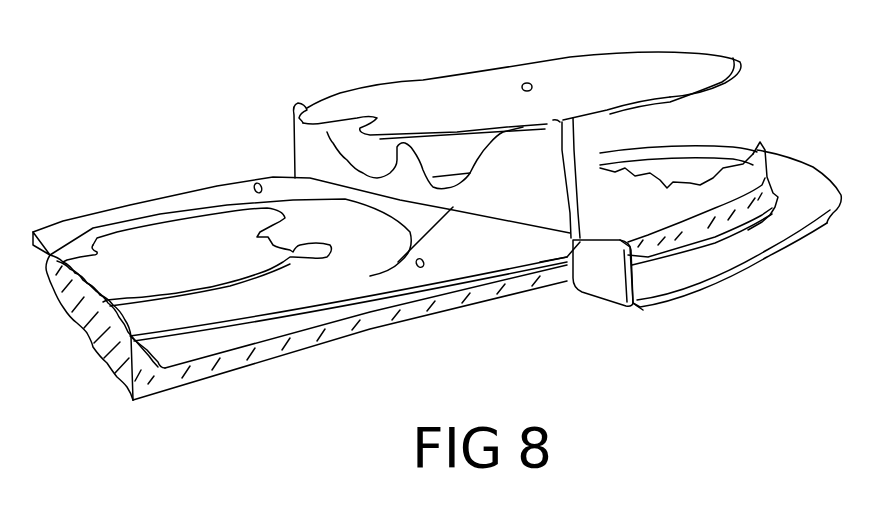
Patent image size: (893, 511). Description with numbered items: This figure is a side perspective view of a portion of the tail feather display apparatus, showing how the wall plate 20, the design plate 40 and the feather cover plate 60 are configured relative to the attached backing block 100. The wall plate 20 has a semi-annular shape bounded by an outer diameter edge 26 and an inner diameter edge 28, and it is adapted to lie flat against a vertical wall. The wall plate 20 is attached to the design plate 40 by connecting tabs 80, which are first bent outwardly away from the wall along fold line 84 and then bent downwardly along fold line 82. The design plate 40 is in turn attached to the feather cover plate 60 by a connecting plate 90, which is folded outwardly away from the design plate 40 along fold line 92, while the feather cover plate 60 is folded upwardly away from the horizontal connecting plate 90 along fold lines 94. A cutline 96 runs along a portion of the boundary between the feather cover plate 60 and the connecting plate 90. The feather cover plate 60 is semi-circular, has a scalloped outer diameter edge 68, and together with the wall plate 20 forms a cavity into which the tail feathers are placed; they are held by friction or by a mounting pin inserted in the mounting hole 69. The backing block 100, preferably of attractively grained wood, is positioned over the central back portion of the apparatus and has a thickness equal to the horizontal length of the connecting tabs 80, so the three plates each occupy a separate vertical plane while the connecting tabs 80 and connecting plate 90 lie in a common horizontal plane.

The wall plate 20 is at (705, 261).
The outer diameter edge 26 is at (787, 242).
The inner diameter edge 28 is at (824, 222).
The design plate 40 is at (472, 248).
The feather cover plate 60 is at (677, 73).
The outer diameter edge 68 is at (708, 100).
The mounting hole 69 is at (523, 86).
The connecting tabs 80 is at (605, 278).
The fold line 82 is at (577, 253).
The fold line 84 is at (627, 310).
The connecting plate 90 is at (303, 155).
The fold line 92 is at (398, 263).
The fold lines 94 is at (297, 105).
The cutline 96 is at (453, 127).
The backing block 100 is at (222, 375).